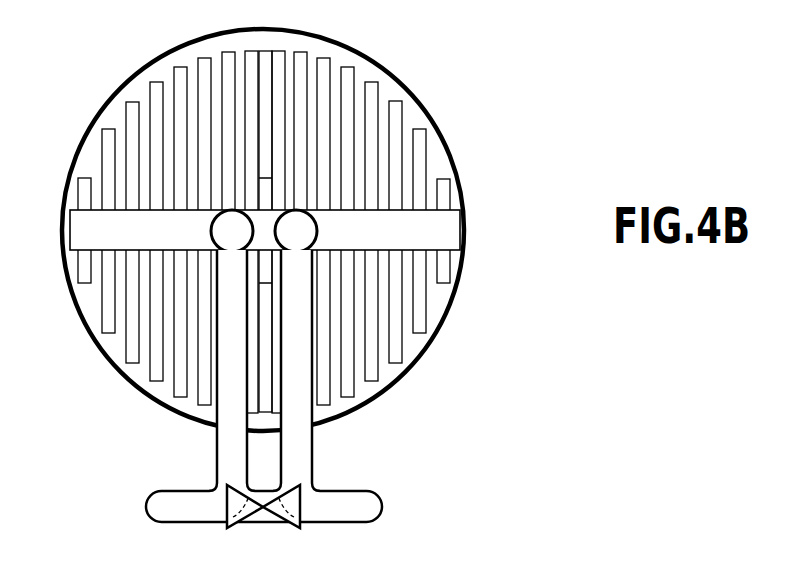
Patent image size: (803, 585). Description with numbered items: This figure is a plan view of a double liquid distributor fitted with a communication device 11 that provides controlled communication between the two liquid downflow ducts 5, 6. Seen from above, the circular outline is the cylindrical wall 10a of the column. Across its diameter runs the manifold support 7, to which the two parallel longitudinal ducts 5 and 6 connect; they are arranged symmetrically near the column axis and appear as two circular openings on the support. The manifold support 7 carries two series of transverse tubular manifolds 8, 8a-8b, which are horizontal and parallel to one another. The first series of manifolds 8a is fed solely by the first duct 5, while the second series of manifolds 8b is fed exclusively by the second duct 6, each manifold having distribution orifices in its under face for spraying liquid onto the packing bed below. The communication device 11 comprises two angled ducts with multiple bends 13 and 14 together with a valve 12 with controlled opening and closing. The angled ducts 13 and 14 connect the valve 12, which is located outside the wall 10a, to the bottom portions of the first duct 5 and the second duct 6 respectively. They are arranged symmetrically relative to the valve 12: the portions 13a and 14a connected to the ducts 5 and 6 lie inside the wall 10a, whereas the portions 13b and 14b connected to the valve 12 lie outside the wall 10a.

The first liquid downflow duct 5 is at (210, 227).
The second liquid downflow duct 6 is at (318, 227).
The manifold support 7 is at (442, 228).
The transverse tubular manifolds 8 is at (289, 224).
The first series of manifolds 8a is at (168, 232).
The second series of manifolds 8b is at (373, 87).
The cylindrical wall 10a is at (84, 140).
The communication device 11 is at (264, 409).
The valve 12 is at (263, 527).
The first angled duct 13 is at (146, 386).
The inside portion of first angled duct 13a is at (232, 408).
The outside portion of first angled duct 13b is at (163, 505).
The second angled duct 14 is at (380, 386).
The inside portion of second angled duct 14a is at (298, 408).
The outside portion of second angled duct 14b is at (365, 505).